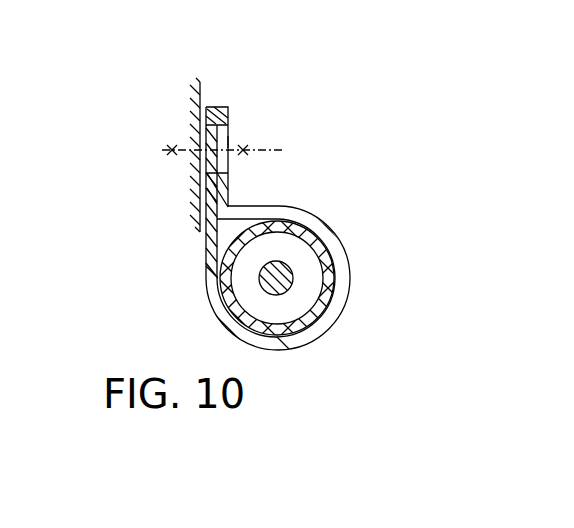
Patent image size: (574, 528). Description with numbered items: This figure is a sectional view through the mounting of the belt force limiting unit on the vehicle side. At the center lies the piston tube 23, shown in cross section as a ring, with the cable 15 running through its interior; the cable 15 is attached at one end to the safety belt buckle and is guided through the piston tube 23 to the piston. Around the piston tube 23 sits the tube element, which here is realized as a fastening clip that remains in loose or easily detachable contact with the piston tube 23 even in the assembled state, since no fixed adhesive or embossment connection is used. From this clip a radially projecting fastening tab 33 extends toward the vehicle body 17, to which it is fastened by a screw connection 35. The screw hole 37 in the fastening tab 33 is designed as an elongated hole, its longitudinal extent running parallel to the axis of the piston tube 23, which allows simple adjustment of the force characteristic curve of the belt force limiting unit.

The cable 15 is at (293, 272).
The vehicle body 17 is at (198, 97).
The piston tube 23 is at (236, 244).
The fastening tab 33 is at (221, 117).
The screw connection 35 is at (263, 150).
The screw hole 37 is at (227, 142).